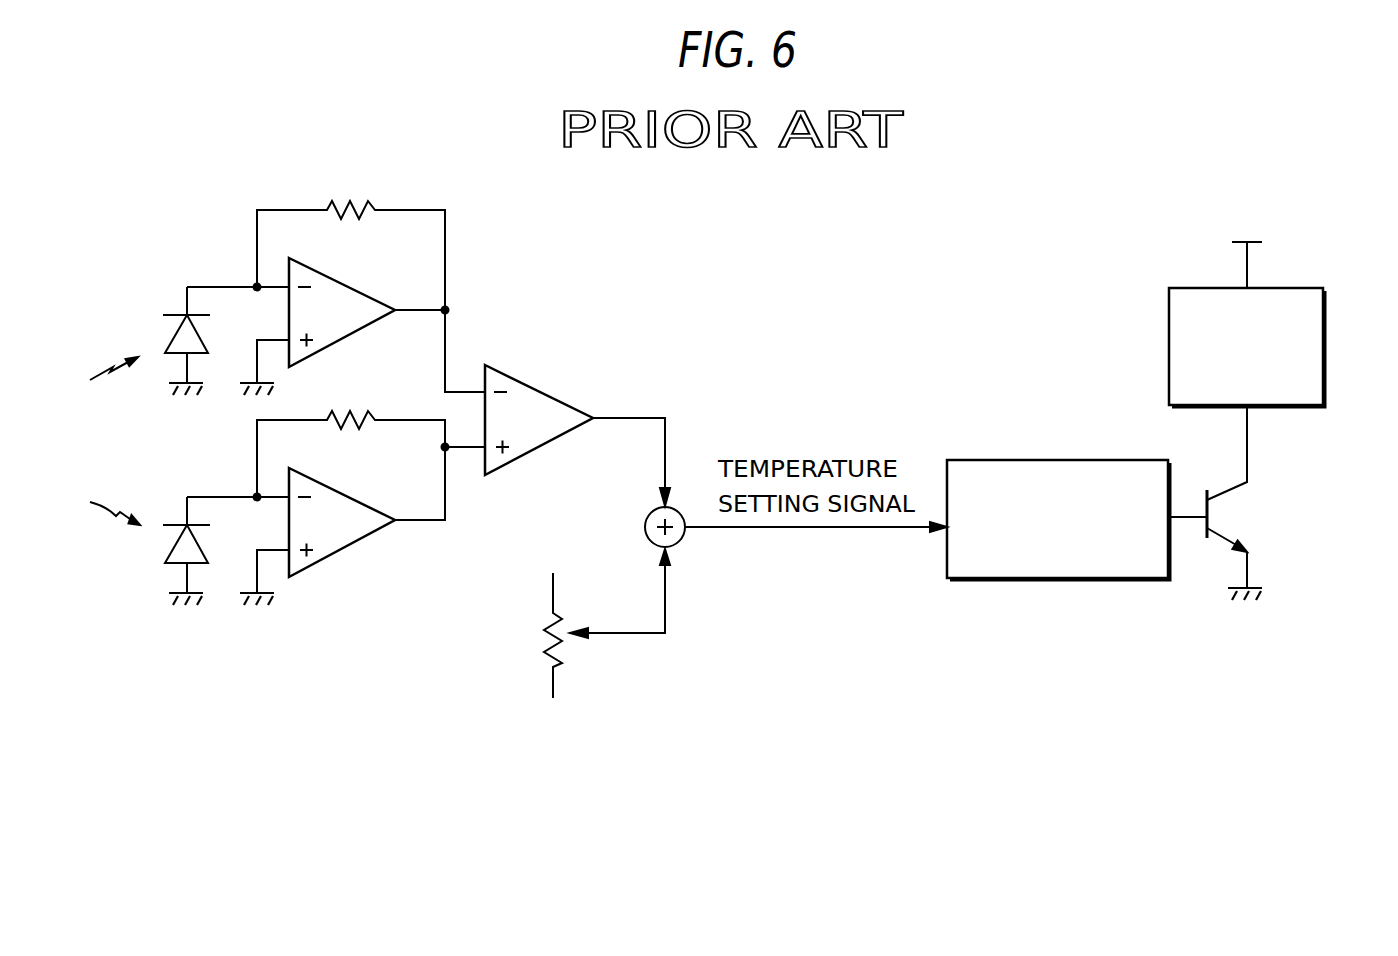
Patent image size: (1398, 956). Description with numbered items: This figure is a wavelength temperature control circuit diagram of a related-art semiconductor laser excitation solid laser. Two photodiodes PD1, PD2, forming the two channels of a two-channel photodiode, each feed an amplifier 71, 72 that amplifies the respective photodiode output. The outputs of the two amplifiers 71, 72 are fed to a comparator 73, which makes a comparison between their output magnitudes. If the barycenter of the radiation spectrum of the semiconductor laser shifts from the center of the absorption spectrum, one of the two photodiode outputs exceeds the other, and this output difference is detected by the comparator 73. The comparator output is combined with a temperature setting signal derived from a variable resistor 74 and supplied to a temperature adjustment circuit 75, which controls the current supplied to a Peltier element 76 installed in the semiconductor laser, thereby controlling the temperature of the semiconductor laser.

The photodiode PD1 is at (170, 343).
The photodiode PD2 is at (165, 554).
The amplifier 71 is at (343, 284).
The amplifier 72 is at (343, 494).
The comparator 73 is at (537, 389).
The variable resistor 74 is at (542, 652).
The temperature adjustment circuit 75 is at (1058, 460).
The Peltier element 76 is at (1327, 342).